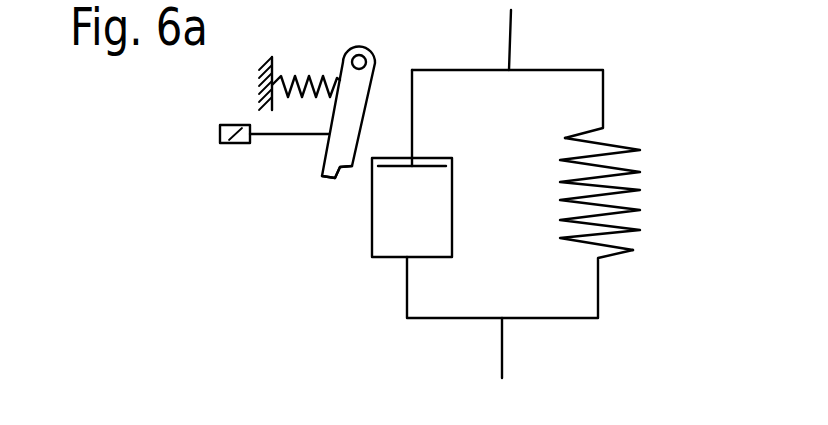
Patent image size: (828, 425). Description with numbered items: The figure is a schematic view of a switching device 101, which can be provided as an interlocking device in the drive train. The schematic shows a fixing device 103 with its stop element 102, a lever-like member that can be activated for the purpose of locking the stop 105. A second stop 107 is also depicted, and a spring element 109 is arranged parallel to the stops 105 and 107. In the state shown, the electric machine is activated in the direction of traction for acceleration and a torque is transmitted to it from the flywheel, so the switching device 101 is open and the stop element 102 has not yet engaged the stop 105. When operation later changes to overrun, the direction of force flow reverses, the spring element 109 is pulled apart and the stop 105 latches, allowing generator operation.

The switching device 101 is at (256, 152).
The stop element 102 is at (358, 91).
The fixing device 103 is at (334, 199).
The stop 105 is at (433, 157).
The stop 107 is at (440, 257).
The spring element 109 is at (637, 187).